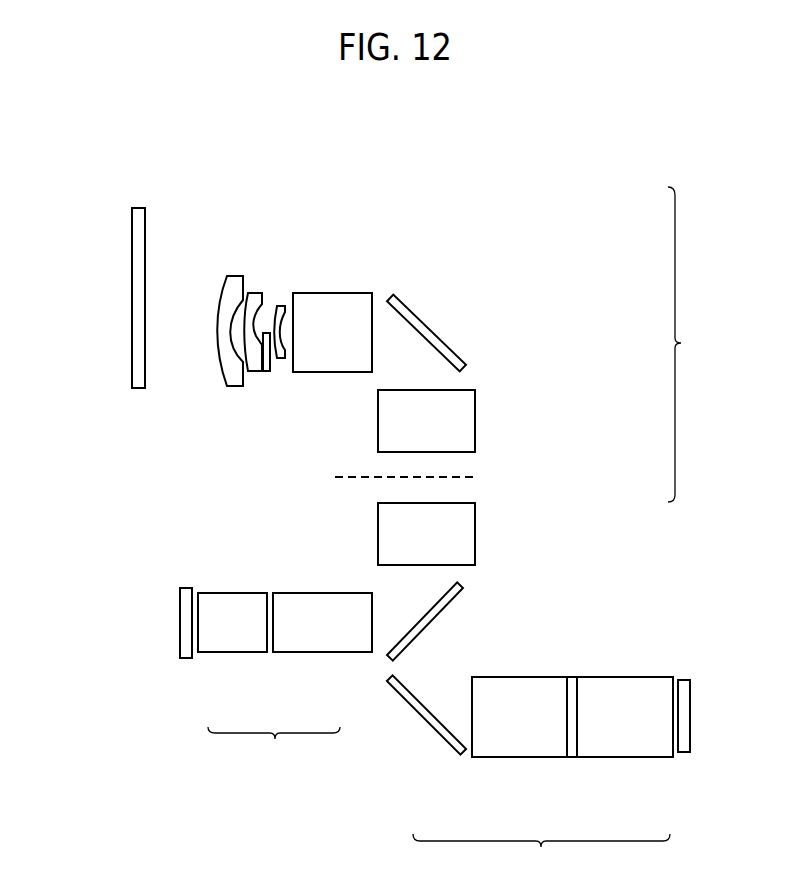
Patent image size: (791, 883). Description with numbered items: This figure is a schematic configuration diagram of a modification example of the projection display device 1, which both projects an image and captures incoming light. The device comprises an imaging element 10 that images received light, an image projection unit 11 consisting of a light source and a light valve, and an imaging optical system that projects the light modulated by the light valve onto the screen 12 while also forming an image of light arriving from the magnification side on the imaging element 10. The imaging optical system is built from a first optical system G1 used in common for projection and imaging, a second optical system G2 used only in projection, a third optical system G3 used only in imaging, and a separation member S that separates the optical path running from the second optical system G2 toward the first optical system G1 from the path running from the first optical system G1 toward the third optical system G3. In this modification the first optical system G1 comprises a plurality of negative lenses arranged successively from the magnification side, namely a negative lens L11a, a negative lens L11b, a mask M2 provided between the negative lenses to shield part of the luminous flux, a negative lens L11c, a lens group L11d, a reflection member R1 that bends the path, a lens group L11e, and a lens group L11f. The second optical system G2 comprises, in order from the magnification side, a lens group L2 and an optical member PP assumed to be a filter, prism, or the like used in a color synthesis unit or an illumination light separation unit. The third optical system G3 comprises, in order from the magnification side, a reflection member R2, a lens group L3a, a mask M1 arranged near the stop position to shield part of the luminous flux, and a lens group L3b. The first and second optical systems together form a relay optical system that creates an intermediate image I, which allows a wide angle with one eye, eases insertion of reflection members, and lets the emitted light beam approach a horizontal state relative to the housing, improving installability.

The projection display device 1 is at (443, 172).
The screen 12 is at (135, 337).
The negative lens L11a is at (240, 276).
The negative lens L11b is at (257, 293).
The mask M2 is at (266, 333).
The negative lens L11c is at (283, 306).
The lens group L11d is at (335, 293).
The reflection member R1 is at (437, 333).
The lens group L11e is at (475, 420).
The intermediate image I is at (398, 476).
The lens group L11f is at (475, 530).
The first optical system G1 is at (691, 344).
The image projection unit 11 is at (182, 639).
The optical member PP is at (230, 653).
The lens group L2 is at (318, 653).
The second optical system G2 is at (274, 751).
The separation member S is at (441, 617).
The reflection member R2 is at (425, 723).
The lens group L3a is at (504, 758).
The mask M1 is at (571, 758).
The lens group L3b is at (637, 758).
The third optical system G3 is at (541, 858).
The imaging element 10 is at (689, 737).